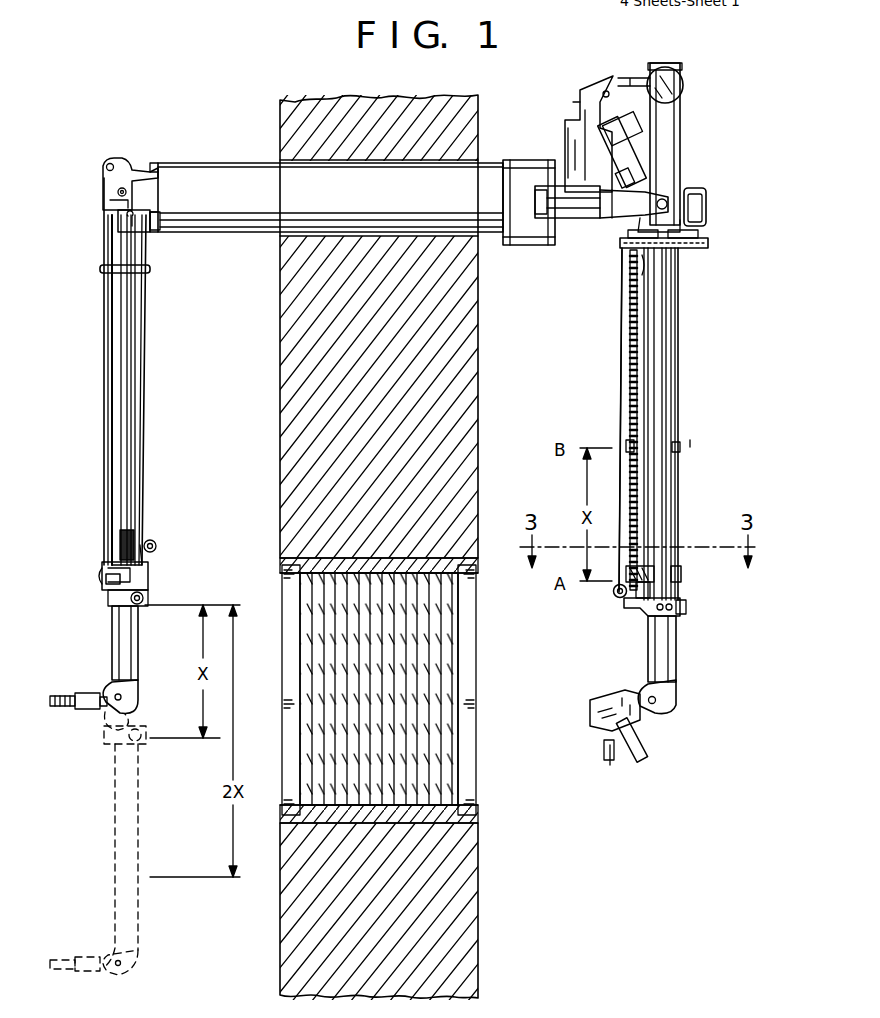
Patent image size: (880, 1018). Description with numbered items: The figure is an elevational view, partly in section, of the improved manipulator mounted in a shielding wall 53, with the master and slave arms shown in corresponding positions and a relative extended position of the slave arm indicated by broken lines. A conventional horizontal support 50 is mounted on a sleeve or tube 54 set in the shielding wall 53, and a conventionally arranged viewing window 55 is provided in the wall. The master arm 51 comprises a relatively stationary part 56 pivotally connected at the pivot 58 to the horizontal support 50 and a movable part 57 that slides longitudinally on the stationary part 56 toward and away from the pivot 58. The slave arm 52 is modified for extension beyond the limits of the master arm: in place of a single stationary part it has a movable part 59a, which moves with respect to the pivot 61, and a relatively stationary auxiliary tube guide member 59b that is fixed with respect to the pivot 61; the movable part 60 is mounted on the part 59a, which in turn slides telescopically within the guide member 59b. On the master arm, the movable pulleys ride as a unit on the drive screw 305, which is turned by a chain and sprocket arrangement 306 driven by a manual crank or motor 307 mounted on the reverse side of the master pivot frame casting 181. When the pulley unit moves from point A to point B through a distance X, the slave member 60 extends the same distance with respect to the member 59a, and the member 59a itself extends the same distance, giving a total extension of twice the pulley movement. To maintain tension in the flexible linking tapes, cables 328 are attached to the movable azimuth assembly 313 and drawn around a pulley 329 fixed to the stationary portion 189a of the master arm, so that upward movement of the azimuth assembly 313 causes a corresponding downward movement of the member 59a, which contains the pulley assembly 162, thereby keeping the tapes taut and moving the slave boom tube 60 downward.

The horizontal support 50 is at (237, 222).
The master arm 51 is at (688, 444).
The slave arm 52 is at (95, 384).
The shielding wall 53 is at (470, 378).
The sleeve or tube 54 is at (478, 238).
The viewing window 55 is at (448, 690).
The stationary part of master arm 56 is at (662, 300).
The movable part of master arm 57 is at (665, 656).
The pivot 58 is at (672, 196).
The movable part of slave arm 59a is at (138, 582).
The stationary auxiliary tube guide member 59b is at (145, 484).
The movable part of slave arm 60 is at (137, 656).
The pivot 61 is at (118, 191).
The pulley assembly 162 is at (103, 583).
The master pivot frame casting 181 is at (668, 142).
The stationary portion of master arm 189a is at (682, 610).
The drive screw 305 is at (630, 342).
The chain and sprocket arrangement 306 is at (708, 245).
The motor 307 is at (702, 200).
The movable azimuth assembly 313 is at (682, 573).
The cables 328 is at (120, 326).
The pulley 329 is at (616, 598).